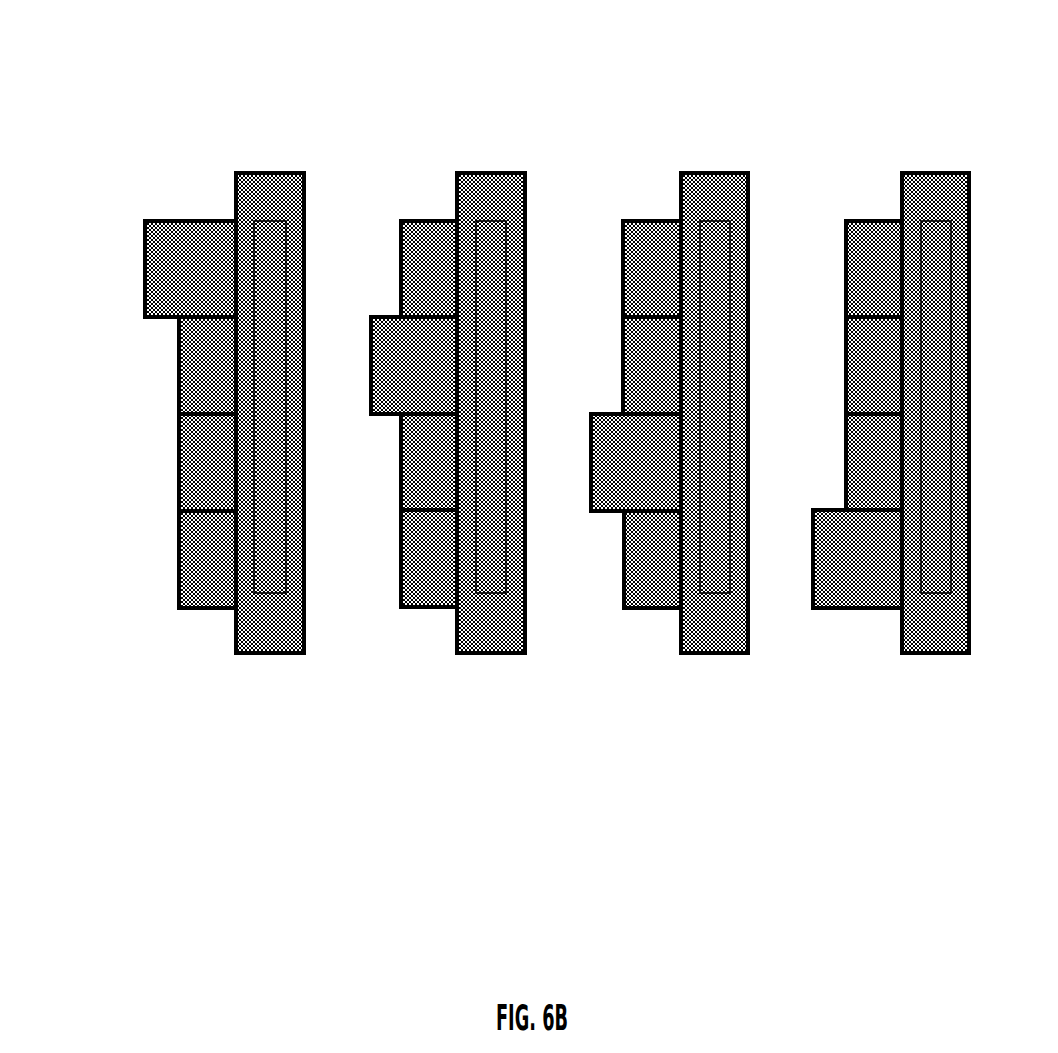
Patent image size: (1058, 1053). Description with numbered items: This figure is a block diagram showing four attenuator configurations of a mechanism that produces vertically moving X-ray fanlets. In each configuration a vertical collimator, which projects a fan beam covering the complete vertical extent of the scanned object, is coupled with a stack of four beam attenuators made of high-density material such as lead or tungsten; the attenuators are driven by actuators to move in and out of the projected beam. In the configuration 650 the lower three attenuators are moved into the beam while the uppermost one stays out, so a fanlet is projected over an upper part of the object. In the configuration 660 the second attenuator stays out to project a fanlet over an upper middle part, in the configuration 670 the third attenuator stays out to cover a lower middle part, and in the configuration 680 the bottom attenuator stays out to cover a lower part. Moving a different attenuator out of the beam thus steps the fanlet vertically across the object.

The configuration 650 is at (224, 434).
The configuration 660 is at (424, 501).
The configuration 670 is at (648, 513).
The configuration 680 is at (866, 511).